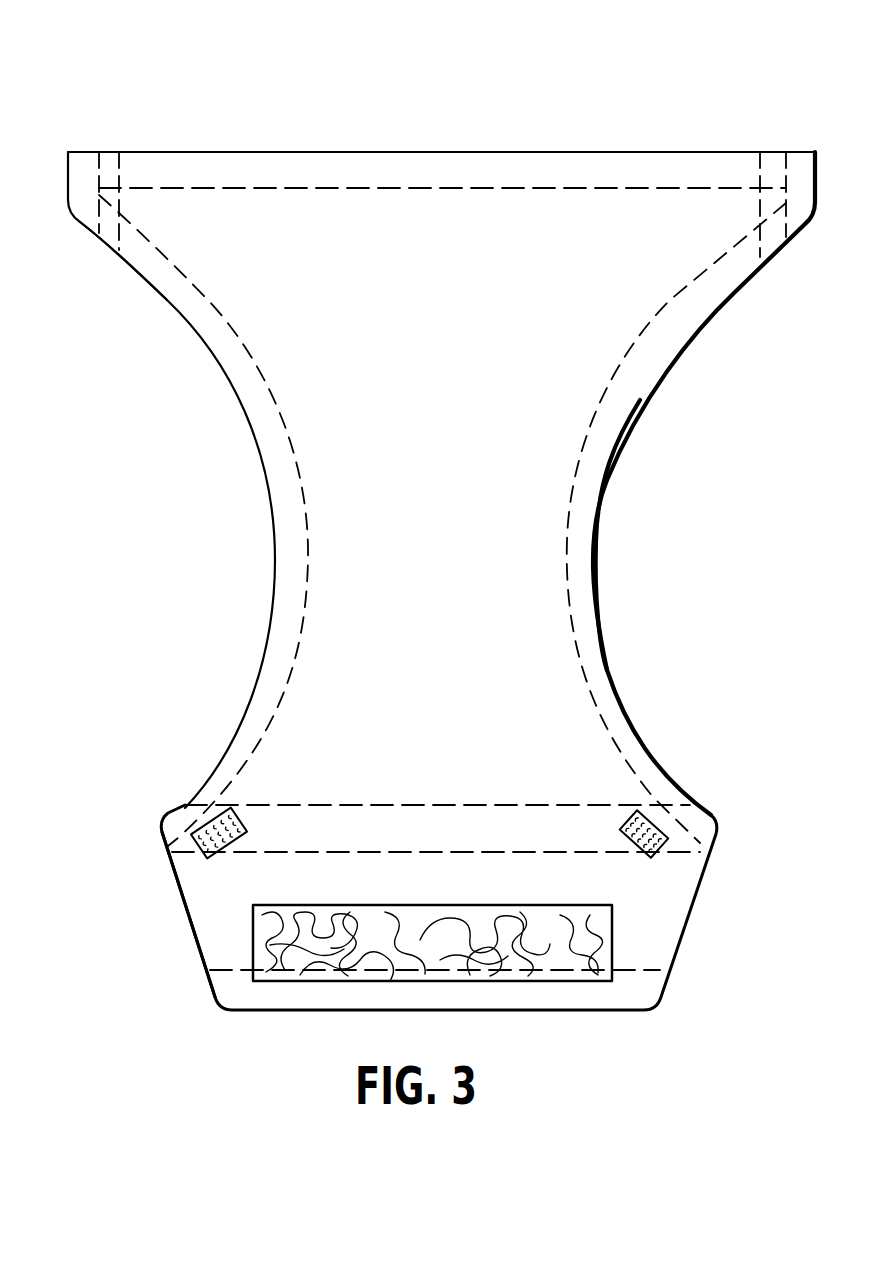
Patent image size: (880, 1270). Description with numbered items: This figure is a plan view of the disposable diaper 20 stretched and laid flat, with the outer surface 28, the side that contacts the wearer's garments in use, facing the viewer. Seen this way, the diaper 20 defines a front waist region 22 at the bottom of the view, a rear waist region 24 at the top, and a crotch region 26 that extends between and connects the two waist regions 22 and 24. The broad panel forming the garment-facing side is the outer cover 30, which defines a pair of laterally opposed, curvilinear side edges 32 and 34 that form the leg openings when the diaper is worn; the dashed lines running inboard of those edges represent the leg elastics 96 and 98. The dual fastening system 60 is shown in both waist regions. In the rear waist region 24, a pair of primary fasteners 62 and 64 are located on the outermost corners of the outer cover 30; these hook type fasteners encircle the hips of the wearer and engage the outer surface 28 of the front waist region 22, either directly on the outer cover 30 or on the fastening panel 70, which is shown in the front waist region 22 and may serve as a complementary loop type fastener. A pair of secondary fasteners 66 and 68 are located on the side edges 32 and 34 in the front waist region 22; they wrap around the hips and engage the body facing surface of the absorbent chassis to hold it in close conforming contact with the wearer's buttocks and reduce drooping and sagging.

The disposable diaper 20 is at (428, 532).
The front waist region 22 is at (735, 891).
The rear waist region 24 is at (752, 312).
The crotch region 26 is at (712, 537).
The outer surface 28 is at (210, 907).
The outer cover 30 is at (591, 218).
The side edge 32 is at (601, 501).
The side edge 34 is at (272, 500).
The dual fastening system 60 is at (85, 257).
The primary fastener 62 is at (783, 152).
The primary fastener 64 is at (90, 152).
The secondary fastener 66 is at (665, 833).
The secondary fastener 68 is at (208, 827).
The fastening panel 70 is at (575, 983).
The leg elastic 96 is at (593, 660).
The leg elastic 98 is at (272, 652).